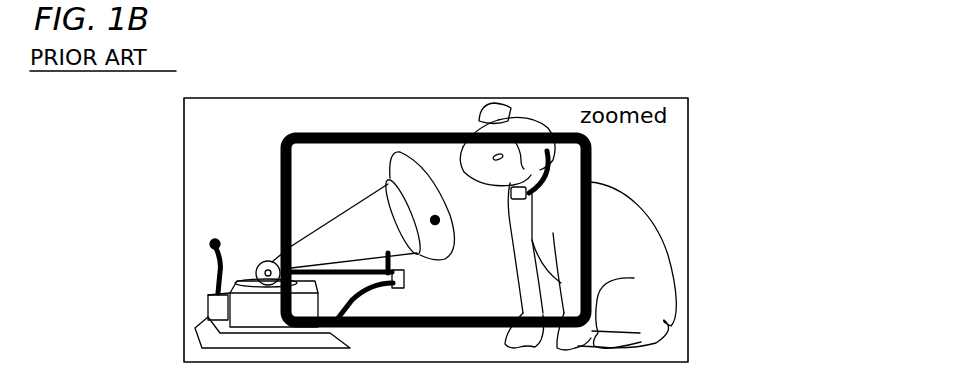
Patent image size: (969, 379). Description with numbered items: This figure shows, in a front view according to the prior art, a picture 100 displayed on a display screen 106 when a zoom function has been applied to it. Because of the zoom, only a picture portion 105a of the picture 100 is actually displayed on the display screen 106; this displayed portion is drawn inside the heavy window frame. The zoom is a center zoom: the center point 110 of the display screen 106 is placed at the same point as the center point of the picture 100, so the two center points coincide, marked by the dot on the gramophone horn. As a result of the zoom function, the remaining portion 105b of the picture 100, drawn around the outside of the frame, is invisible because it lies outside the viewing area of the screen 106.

The picture 100 is at (688, 199).
The picture portion 105a is at (435, 157).
The portion of picture 105b is at (662, 156).
The display screen 106 is at (281, 160).
The center point of display screen 110 is at (435, 220).